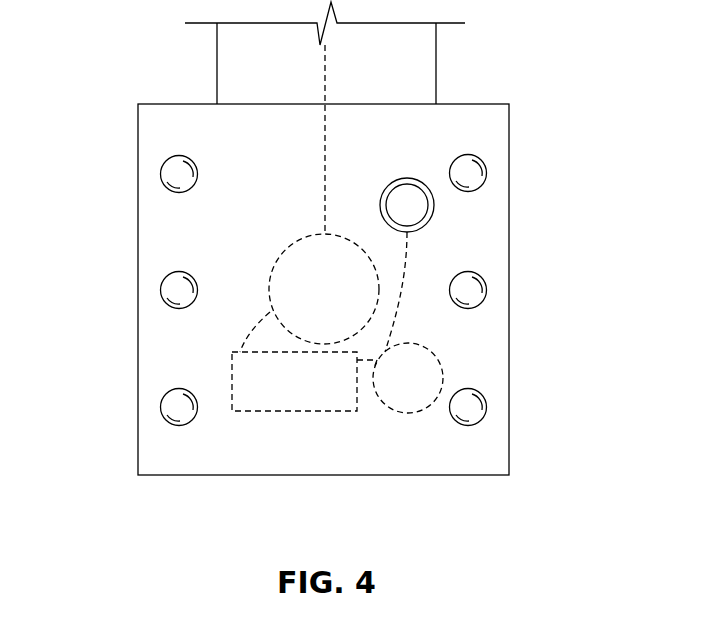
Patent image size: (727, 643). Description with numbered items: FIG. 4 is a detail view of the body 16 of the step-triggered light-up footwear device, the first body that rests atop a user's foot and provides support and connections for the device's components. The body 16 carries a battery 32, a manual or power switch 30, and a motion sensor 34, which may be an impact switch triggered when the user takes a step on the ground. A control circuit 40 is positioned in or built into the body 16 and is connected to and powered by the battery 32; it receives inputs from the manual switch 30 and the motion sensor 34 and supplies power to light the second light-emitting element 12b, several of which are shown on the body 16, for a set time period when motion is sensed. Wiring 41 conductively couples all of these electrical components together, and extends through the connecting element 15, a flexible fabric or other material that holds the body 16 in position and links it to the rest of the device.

The second light-emitting element 12b is at (161, 175).
The connecting element 15 is at (436, 72).
The body 16 is at (197, 104).
The manual switch 30 is at (434, 210).
The battery 32 is at (268, 272).
The motion sensor 34 is at (443, 367).
The control circuit 40 is at (226, 385).
The wiring 41 is at (325, 88).